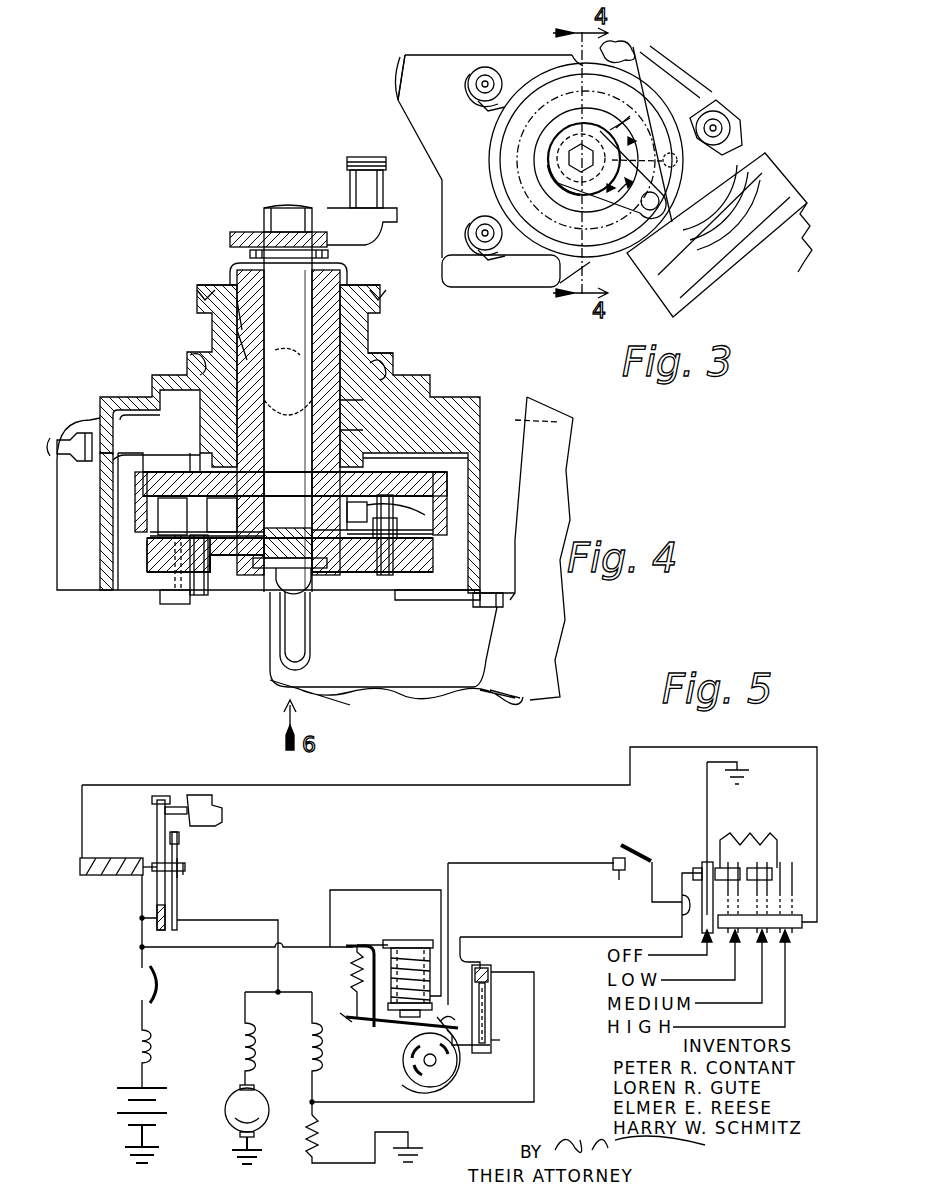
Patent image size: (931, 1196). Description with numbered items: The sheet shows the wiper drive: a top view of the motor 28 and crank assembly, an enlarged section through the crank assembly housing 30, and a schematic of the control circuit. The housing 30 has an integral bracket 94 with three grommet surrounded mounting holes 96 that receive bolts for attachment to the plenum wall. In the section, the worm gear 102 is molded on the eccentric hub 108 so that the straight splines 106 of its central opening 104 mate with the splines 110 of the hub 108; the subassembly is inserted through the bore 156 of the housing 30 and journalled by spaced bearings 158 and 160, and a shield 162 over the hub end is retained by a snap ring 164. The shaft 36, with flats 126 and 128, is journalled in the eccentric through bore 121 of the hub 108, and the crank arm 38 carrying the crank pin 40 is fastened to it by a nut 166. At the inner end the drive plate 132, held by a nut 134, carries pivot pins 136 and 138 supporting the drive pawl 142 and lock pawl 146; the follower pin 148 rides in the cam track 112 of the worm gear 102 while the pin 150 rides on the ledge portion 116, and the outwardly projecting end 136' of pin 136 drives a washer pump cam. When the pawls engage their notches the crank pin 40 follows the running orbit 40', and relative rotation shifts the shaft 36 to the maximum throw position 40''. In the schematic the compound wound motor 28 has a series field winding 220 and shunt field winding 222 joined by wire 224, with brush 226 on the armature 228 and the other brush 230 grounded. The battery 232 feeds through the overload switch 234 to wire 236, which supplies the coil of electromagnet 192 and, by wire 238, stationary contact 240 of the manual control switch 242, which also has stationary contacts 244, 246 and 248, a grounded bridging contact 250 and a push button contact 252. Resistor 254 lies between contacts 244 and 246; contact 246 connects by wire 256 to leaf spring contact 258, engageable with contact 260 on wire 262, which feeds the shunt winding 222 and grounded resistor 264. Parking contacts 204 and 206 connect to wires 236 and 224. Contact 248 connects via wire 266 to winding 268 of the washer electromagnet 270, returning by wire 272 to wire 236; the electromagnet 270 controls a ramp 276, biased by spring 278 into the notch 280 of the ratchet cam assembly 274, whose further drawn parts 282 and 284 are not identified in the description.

In FIG. 3, the unidirectional motor 28 is at (750, 246).
In FIG. 4, the unidirectional motor 28 is at (556, 422).
In FIG. 5, the unidirectional motor 28 is at (228, 1109).
In FIG. 3, the crank assembly housing 30 is at (400, 97).
In FIG. 4, the crank assembly housing 30 is at (100, 590).
In FIG. 4, the shaft 36 is at (272, 262).
In FIG. 3, the crank arm 38 is at (556, 147).
In FIG. 4, the crank arm 38 is at (372, 236).
In FIG. 3, the crank pin 40 is at (615, 191).
In FIG. 4, the crank pin 40 is at (366, 164).
In FIG. 3, the running orbit 40' is at (644, 88).
In FIG. 3, the maximum throw position 40'' is at (699, 145).
In FIG. 3, the integral bracket 94 is at (424, 58).
In FIG. 3, the mounting holes 96 is at (487, 78).
In FIG. 4, the worm gear 102 is at (148, 472).
In FIG. 4, the central opening 104 is at (245, 482).
In FIG. 4, the straight splines 106 is at (330, 572).
In FIG. 3, the hub 108 is at (566, 160).
In FIG. 4, the hub 108 is at (332, 333).
In FIG. 4, the straight splines 110 is at (248, 568).
In FIG. 4, the cam track 112 is at (148, 540).
In FIG. 4, the ledge portion 116 is at (400, 512).
In FIG. 4, the eccentric through bore 121 is at (262, 295).
In FIG. 4, the flat 126 is at (297, 240).
In FIG. 4, the flat 128 is at (290, 560).
In FIG. 4, the plate 132 is at (160, 572).
In FIG. 4, the nut 134 is at (314, 592).
In FIG. 4, the pivot pin 136 is at (163, 625).
In FIG. 4, the outwardly projecting end 136' is at (181, 586).
In FIG. 4, the pivot pin 138 is at (385, 576).
In FIG. 4, the drive pawl 142 is at (210, 572).
In FIG. 4, the lock pawl 146 is at (424, 575).
In FIG. 4, the cam follower pin 148 is at (186, 497).
In FIG. 4, the pin 150 is at (345, 512).
In FIG. 4, the bore 156 is at (385, 370).
In FIG. 4, the bearing 158 is at (381, 300).
In FIG. 4, the bearing 160 is at (345, 416).
In FIG. 3, the shield 162 is at (622, 123).
In FIG. 4, the shield 162 is at (355, 296).
In FIG. 4, the snap ring 164 is at (262, 258).
In FIG. 4, the nut 166 is at (272, 208).
In FIG. 5, the electromagnet 192 is at (80, 872).
In FIG. 5, the leaf spring contact 204 is at (157, 840).
In FIG. 5, the leaf spring contact 206 is at (180, 846).
In FIG. 5, the series field winding 220 is at (238, 1040).
In FIG. 5, the shunt field winding 222 is at (314, 1066).
In FIG. 5, the wire 224 is at (278, 988).
In FIG. 5, the brush 226 is at (254, 1090).
In FIG. 5, the armature 228 is at (232, 1125).
In FIG. 5, the commutator brush 230 is at (244, 1146).
In FIG. 5, the battery 232 is at (124, 1089).
In FIG. 5, the overload switch 234 is at (160, 1004).
In FIG. 5, the wire 236 is at (142, 933).
In FIG. 5, the wire 238 is at (352, 783).
In FIG. 5, the stationary switch contact 240 is at (798, 928).
In FIG. 5, the manual wiper unit control switch 242 is at (702, 868).
In FIG. 5, the stationary contact 244 is at (770, 865).
In FIG. 5, the stationary contact 246 is at (728, 865).
In FIG. 5, the stationary contact 248 is at (620, 871).
In FIG. 5, the movable bridging contact 250 is at (702, 919).
In FIG. 5, the push button movable contact 252 is at (622, 845).
In FIG. 5, the resistor 254 is at (766, 833).
In FIG. 5, the wire 256 is at (556, 937).
In FIG. 5, the leaf spring contact 258 is at (478, 963).
In FIG. 5, the leaf spring contact 260 is at (492, 1012).
In FIG. 5, the wire 262 is at (534, 1051).
In FIG. 5, the resistor 264 is at (318, 1126).
In FIG. 5, the wire 266 is at (520, 859).
In FIG. 5, the winding 268 is at (415, 945).
In FIG. 5, the electromagnet 270 is at (410, 1022).
In FIG. 5, the wire 272 is at (370, 890).
In FIG. 5, the ratchet cam assembly 274 is at (442, 1076).
In FIG. 5, the ramp 276 is at (442, 1026).
In FIG. 5, the spring 278 is at (355, 970).
In FIG. 5, the notch 280 is at (457, 1062).
In FIG. 5, the conductor 282 is at (495, 1043).
In FIG. 5, the cam follower 284 is at (416, 1080).